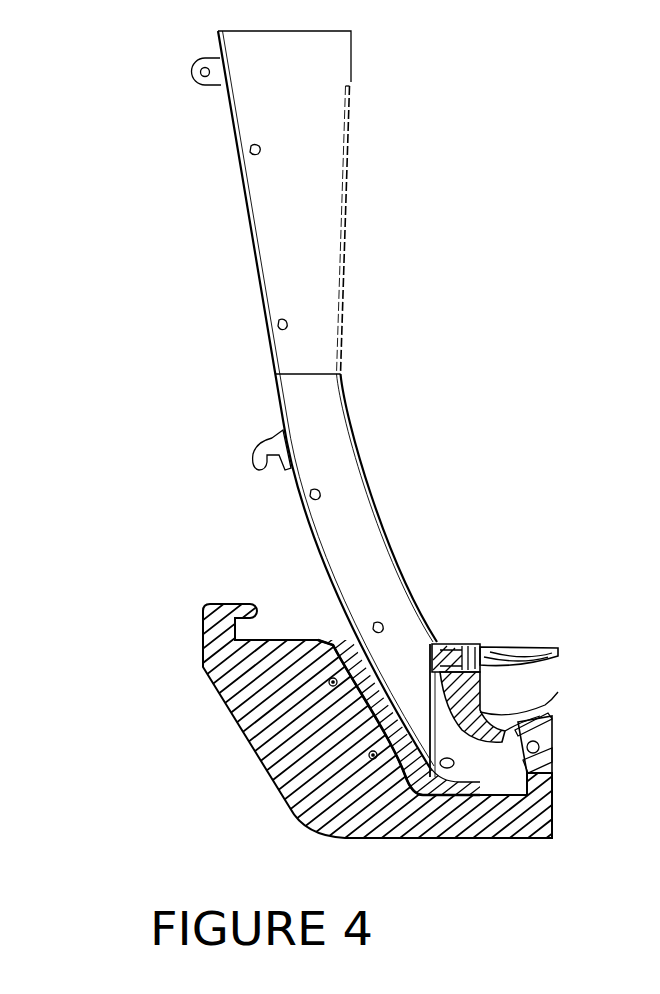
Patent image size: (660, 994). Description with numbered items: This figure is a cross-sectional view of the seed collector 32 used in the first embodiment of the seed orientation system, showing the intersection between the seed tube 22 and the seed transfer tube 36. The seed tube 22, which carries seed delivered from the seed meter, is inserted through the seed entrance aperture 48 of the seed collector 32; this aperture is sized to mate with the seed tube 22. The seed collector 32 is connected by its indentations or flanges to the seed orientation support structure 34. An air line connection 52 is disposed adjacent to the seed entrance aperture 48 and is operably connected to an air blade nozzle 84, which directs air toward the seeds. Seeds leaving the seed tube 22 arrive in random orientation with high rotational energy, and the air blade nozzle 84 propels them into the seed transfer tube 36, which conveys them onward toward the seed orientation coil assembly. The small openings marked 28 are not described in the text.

The seed tube 22 is at (248, 253).
The apertures 28 is at (250, 152).
The seed collector 32 is at (510, 714).
The seed orientation support structure 34 is at (247, 740).
The seed transfer tube 36 is at (553, 722).
The seed entrance aperture 48 is at (334, 643).
The air line connection 52 is at (520, 646).
The air blade nozzle 84 is at (437, 642).